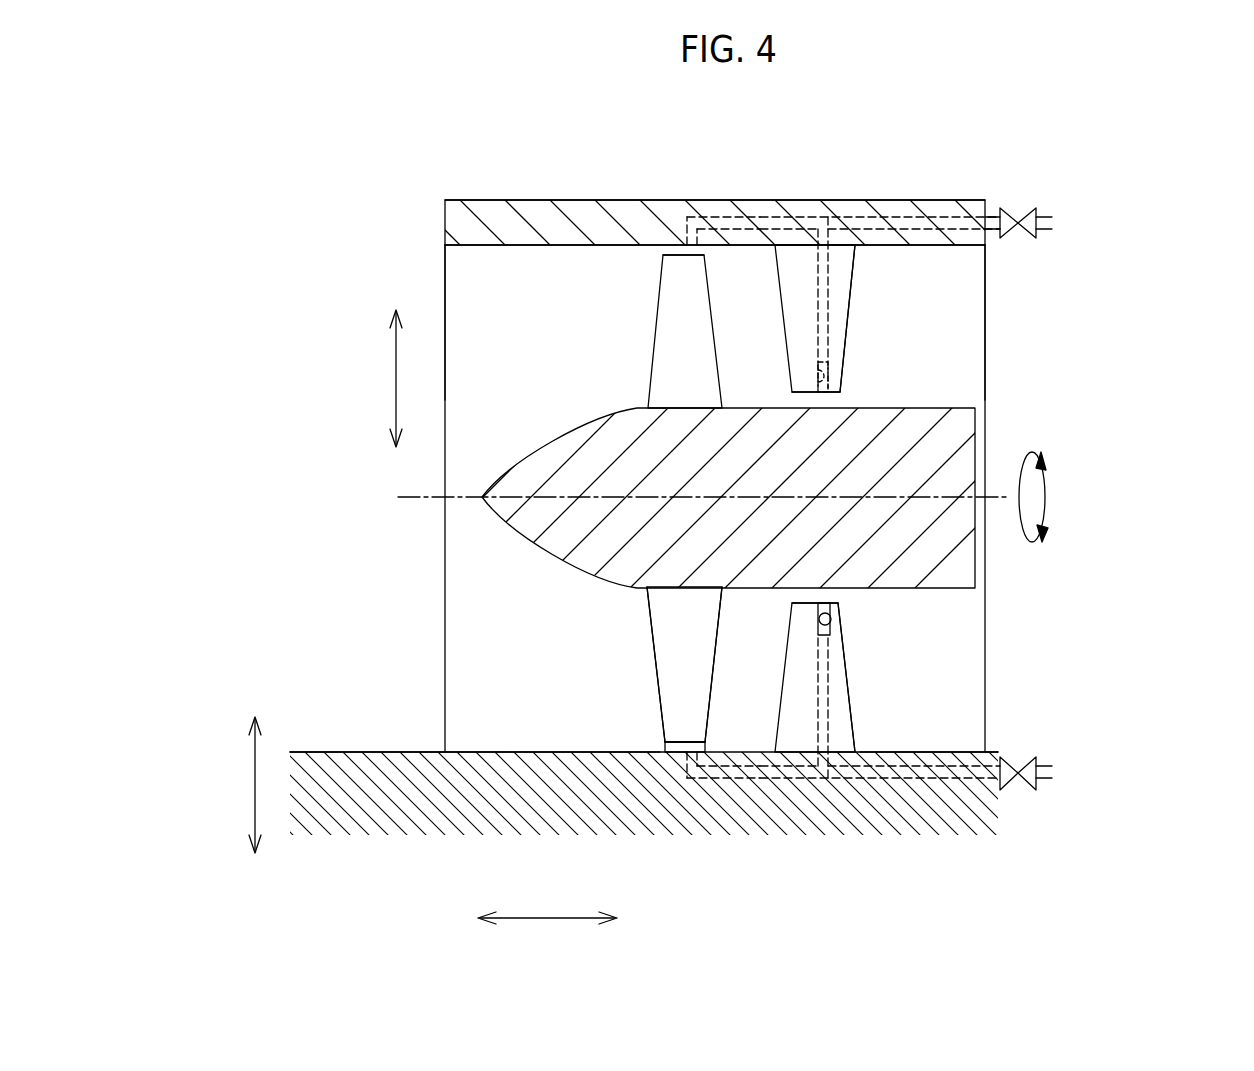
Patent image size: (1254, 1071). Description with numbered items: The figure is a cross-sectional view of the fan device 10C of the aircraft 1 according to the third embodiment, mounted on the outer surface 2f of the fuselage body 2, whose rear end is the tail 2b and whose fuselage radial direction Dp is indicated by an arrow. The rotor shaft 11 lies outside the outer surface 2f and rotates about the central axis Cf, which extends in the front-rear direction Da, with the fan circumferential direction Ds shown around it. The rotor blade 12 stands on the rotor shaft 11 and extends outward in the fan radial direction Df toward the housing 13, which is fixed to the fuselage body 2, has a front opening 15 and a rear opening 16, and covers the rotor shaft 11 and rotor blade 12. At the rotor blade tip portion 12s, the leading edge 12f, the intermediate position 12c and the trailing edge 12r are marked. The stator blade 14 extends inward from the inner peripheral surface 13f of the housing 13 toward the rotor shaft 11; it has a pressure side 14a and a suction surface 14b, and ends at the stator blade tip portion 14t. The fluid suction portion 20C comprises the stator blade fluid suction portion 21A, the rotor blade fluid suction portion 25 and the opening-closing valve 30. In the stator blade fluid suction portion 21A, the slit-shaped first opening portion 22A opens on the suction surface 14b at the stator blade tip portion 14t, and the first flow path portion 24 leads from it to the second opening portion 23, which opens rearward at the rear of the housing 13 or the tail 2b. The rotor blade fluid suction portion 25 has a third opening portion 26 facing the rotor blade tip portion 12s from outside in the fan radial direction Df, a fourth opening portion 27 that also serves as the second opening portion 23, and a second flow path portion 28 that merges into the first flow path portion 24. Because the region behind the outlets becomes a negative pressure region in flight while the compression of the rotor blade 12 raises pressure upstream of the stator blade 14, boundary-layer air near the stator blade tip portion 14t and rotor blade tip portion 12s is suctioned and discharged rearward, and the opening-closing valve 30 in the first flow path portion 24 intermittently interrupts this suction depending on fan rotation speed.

The fan device 10C is at (490, 192).
The aircraft 1 is at (715, 426).
The fuselage body 2 is at (320, 742).
The outer surface 2f is at (393, 752).
The tail 2b is at (957, 752).
The rotor shaft 11 is at (931, 405).
The rotor blade 12 is at (668, 322).
The leading edge 12f is at (667, 743).
The rotor blade tip portion 12s is at (684, 250).
The intermediate position 12c is at (684, 745).
The trailing edge 12r is at (702, 745).
The housing 13 is at (600, 200).
The inner peripheral surface 13f is at (758, 248).
The stator blade 14 is at (850, 303).
The stator vane pressure surface 14a is at (838, 328).
The suction surface 14b is at (838, 670).
The stator blade tip portion 14t is at (805, 603).
The opening 15 is at (482, 246).
The opening 16 is at (966, 245).
The fluid suction portion 20C is at (865, 521).
The stator blade fluid suction portion 21A is at (817, 286).
The first opening portion 22A is at (826, 375).
The second opening portion 23 is at (1053, 223).
The fourth opening portion 27 is at (1101, 508).
The first flow path portion 24 is at (937, 215).
The rotor blade fluid suction portion 25 is at (705, 217).
The third opening portion 26 is at (692, 260).
The second flow path portion 28 is at (725, 229).
The opening-closing valve 30 is at (1028, 209).
The fan radial direction Df is at (380, 378).
The fuselage radial direction Dp is at (240, 785).
The front-rear direction Da is at (547, 903).
The fan circumferential direction Ds is at (1043, 462).
The central axis Cf is at (425, 497).